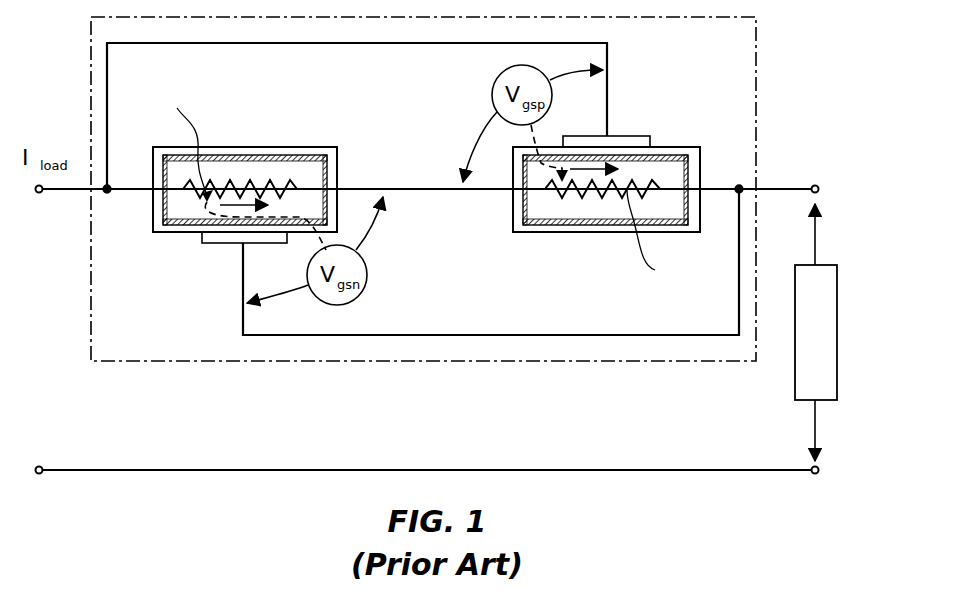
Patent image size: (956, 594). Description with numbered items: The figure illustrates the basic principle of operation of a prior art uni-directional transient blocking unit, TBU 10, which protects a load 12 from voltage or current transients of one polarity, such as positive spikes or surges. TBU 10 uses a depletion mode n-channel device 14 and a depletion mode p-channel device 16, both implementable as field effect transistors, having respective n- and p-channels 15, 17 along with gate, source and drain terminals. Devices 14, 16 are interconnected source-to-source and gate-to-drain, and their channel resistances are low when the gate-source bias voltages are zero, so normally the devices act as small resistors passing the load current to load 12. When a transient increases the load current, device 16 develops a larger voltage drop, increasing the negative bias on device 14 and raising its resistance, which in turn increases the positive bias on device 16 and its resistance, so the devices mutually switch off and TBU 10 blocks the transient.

The transient blocking unit 10 is at (756, 108).
The load 12 is at (795, 385).
The depletion mode n-channel device 14 is at (183, 232).
The n-channel 15 is at (263, 155).
The depletion mode p-channel device 16 is at (678, 147).
The p-channel 17 is at (547, 232).